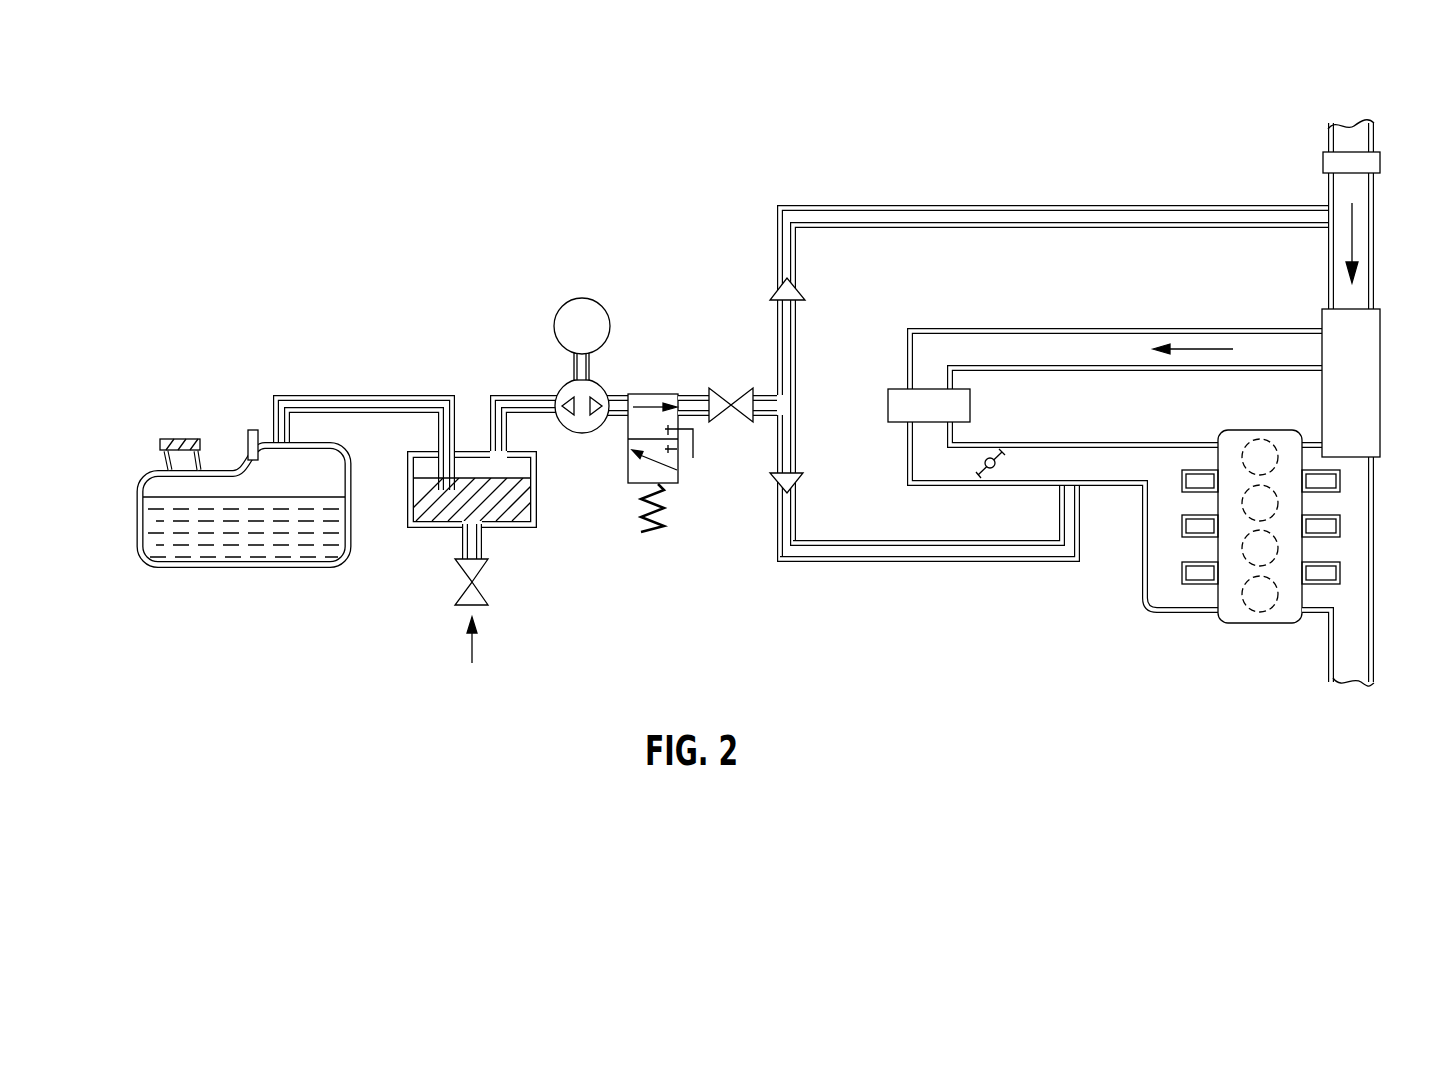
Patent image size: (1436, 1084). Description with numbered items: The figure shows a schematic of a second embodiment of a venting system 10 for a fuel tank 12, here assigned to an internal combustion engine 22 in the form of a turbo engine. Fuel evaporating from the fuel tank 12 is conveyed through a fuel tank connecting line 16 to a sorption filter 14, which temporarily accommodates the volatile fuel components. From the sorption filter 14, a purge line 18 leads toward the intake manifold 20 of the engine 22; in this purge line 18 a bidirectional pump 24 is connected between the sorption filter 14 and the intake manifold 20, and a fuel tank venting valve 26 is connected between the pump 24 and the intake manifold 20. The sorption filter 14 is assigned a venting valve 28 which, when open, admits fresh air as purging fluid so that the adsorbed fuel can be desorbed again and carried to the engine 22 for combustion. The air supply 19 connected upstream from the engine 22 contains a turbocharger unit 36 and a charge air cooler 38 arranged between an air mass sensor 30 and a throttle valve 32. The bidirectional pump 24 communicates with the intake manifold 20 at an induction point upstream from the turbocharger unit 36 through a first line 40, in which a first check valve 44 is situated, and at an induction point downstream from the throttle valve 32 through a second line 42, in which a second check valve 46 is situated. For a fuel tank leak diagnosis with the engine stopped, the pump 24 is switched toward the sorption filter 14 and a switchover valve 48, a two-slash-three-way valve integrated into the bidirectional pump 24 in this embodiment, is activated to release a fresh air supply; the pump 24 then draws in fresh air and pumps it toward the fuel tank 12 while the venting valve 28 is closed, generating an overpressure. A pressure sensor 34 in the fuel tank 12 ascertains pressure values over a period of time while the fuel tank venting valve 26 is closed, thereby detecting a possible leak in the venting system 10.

The venting system 10 is at (323, 188).
The fuel tank 12 is at (246, 572).
The sorption filter 14 is at (537, 495).
The fuel tank connecting line 16 is at (353, 393).
The purge line 18 is at (520, 394).
The air supply 19 is at (1357, 188).
The intake manifold 20 is at (1045, 462).
The internal combustion engine 22 is at (1237, 608).
The bidirectional pump 24 is at (584, 322).
The fuel tank venting valve 26 is at (722, 398).
The venting valve 28 is at (475, 592).
The air mass sensor 30 is at (1335, 163).
The throttle valve 32 is at (995, 455).
The pressure sensor 34 is at (250, 438).
The turbocharger unit 36 is at (1345, 406).
The charge air cooler 38 is at (895, 402).
The first line 40 is at (1052, 205).
The second line 42 is at (921, 563).
The first check valve 44 is at (798, 292).
The second check valve 46 is at (796, 482).
The switchover valve 48 is at (641, 471).